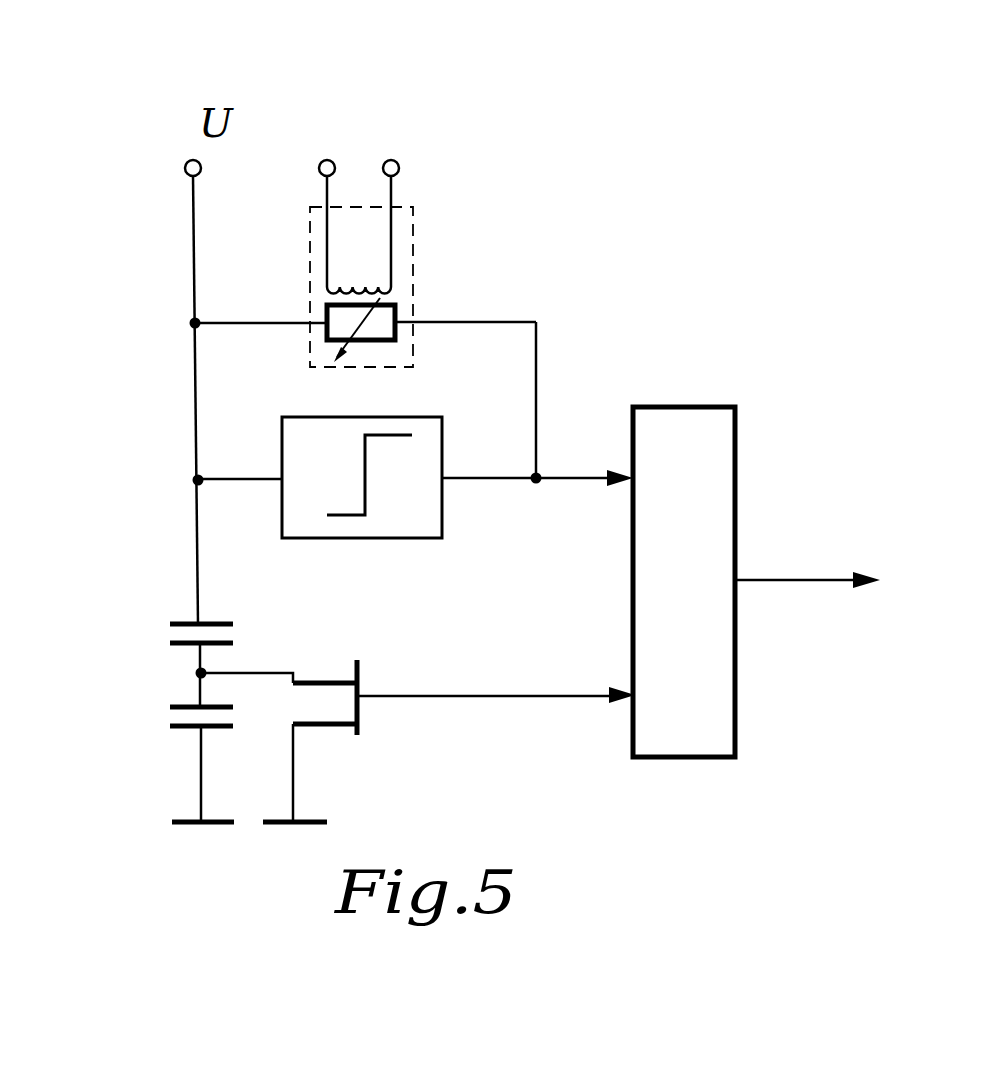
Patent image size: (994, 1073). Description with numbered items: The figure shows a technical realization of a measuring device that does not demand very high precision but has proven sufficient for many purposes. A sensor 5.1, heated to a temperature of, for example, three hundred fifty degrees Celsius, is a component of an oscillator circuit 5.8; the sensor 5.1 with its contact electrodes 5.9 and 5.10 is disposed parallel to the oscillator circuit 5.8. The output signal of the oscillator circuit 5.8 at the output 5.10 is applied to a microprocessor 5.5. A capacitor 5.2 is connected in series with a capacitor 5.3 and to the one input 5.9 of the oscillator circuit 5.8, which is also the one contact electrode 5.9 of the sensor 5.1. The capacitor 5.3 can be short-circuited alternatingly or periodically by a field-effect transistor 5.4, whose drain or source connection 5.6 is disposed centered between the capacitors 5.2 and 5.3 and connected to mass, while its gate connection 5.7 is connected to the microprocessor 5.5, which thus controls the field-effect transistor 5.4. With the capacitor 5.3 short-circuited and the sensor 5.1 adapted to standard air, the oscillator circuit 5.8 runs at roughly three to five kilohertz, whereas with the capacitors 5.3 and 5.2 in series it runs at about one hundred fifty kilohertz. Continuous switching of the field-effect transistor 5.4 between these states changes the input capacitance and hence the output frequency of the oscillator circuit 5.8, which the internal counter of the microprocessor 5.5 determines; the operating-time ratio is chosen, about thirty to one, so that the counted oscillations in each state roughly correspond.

The sensor 5.1 is at (407, 272).
The capacitor 5.2 is at (187, 623).
The capacitor 5.3 is at (190, 727).
The field-effect transistor 5.4 is at (358, 718).
The microprocessor 5.5 is at (718, 447).
The source connection 5.6 is at (293, 672).
The gate connection 5.7 is at (487, 693).
The oscillator circuit 5.8 is at (453, 532).
The contact electrode 5.9 is at (195, 480).
The output 5.10 is at (540, 457).